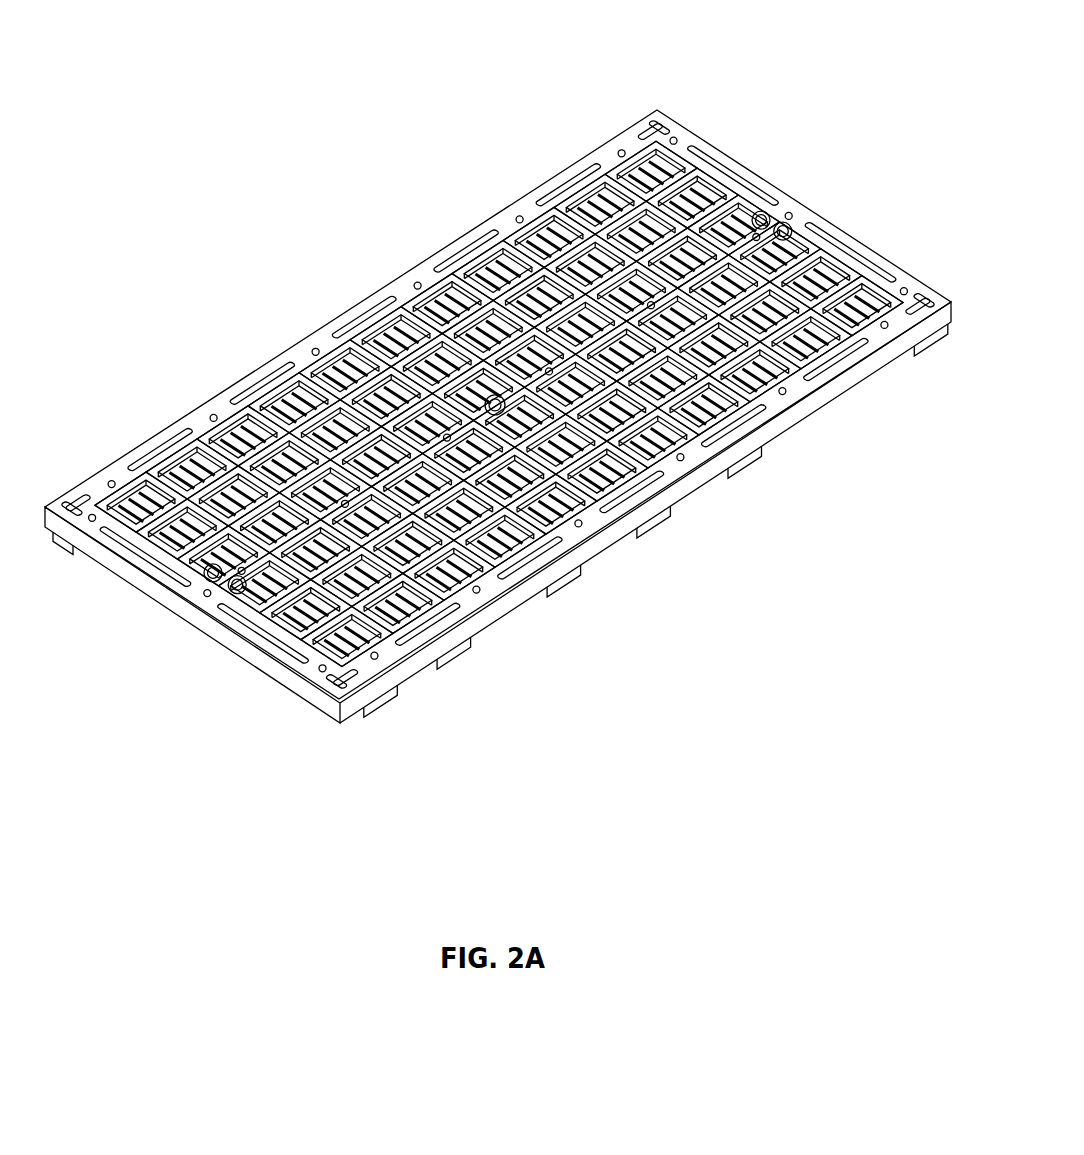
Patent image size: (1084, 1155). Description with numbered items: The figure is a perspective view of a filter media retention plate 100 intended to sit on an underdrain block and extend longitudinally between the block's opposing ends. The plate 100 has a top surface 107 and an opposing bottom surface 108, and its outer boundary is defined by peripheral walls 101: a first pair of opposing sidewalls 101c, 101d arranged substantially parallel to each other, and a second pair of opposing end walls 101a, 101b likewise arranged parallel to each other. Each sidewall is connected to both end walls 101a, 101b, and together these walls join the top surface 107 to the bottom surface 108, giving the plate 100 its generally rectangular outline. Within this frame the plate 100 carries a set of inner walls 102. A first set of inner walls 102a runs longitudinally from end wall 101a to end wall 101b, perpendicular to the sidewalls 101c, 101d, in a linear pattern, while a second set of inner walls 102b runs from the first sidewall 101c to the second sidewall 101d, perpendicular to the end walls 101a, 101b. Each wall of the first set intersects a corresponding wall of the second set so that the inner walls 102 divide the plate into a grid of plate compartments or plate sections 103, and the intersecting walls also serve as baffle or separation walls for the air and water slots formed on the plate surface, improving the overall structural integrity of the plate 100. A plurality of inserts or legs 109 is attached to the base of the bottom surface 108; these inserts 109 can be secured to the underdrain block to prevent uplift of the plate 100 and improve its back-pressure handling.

The filter media retention plate 100 is at (817, 48).
The sidewalls and end walls 101 is at (232, 386).
The end wall 101a is at (177, 583).
The end wall 101b is at (772, 186).
The sidewall 101c is at (174, 430).
The sidewall 101d is at (457, 617).
The inner walls 102 is at (217, 588).
The first set of inner walls 102a is at (776, 390).
The second set of inner walls 102b is at (795, 238).
The plate sections 103 is at (503, 593).
The top surface 107 is at (604, 141).
The bottom surface 108 is at (97, 563).
The inserts or legs 109 is at (724, 474).